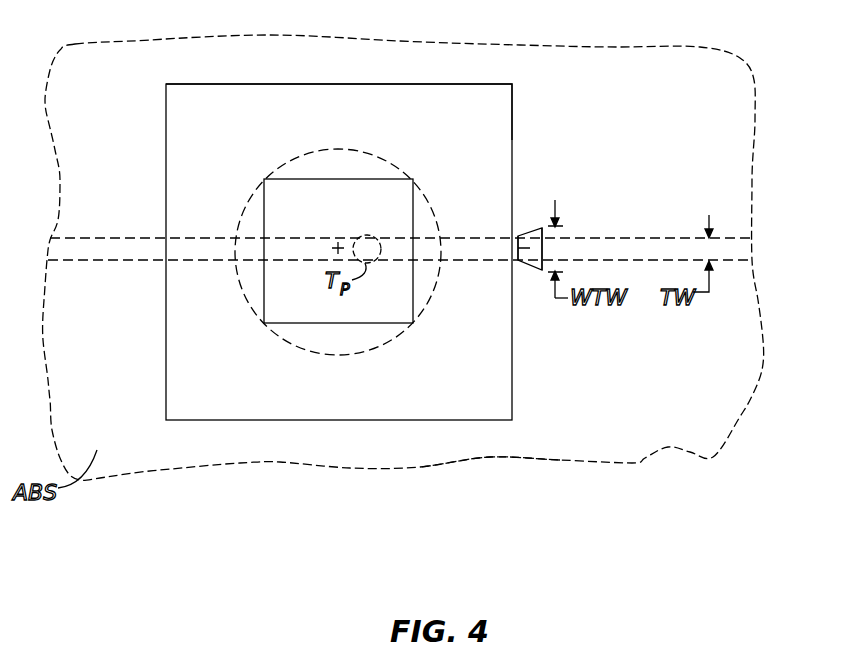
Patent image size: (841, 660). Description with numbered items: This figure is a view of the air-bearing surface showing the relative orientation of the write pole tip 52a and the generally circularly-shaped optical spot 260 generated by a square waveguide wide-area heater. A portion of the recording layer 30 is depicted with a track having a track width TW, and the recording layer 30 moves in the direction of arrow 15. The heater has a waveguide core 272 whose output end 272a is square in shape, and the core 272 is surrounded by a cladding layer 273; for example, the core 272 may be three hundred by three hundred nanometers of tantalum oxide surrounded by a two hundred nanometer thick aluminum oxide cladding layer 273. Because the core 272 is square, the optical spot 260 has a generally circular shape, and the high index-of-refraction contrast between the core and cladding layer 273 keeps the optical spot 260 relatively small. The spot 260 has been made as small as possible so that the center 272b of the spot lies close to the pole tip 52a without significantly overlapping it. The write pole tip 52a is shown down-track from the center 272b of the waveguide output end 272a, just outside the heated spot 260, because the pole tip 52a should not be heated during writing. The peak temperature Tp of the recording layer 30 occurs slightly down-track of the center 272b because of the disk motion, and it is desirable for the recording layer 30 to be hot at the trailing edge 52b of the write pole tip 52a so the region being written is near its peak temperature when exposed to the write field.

The arrow 15 is at (762, 251).
The recording layer 30 is at (633, 463).
The write pole tip 52a is at (523, 243).
The trailing edge 52b is at (543, 250).
The optical spot 260 is at (300, 155).
The waveguide core 272 is at (366, 187).
The output end 272a is at (513, 103).
The center 272b is at (342, 250).
The cladding layer 273 is at (437, 95).